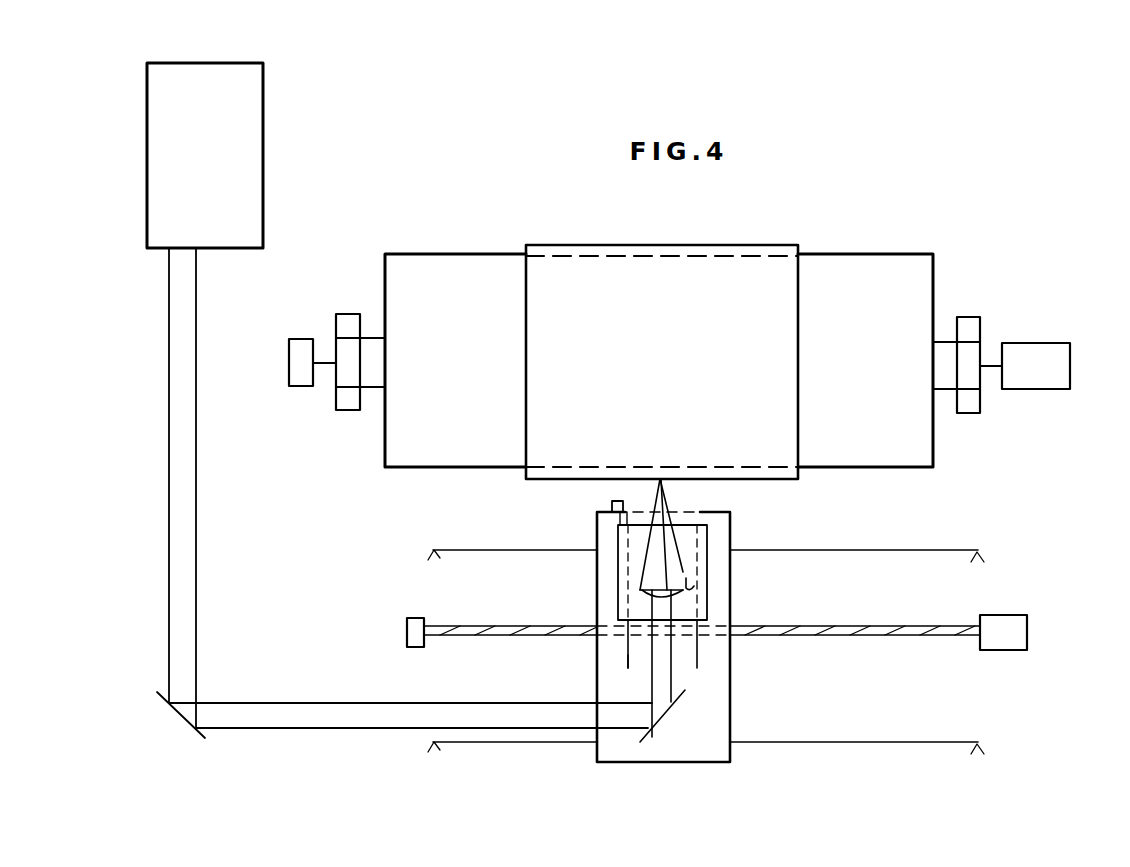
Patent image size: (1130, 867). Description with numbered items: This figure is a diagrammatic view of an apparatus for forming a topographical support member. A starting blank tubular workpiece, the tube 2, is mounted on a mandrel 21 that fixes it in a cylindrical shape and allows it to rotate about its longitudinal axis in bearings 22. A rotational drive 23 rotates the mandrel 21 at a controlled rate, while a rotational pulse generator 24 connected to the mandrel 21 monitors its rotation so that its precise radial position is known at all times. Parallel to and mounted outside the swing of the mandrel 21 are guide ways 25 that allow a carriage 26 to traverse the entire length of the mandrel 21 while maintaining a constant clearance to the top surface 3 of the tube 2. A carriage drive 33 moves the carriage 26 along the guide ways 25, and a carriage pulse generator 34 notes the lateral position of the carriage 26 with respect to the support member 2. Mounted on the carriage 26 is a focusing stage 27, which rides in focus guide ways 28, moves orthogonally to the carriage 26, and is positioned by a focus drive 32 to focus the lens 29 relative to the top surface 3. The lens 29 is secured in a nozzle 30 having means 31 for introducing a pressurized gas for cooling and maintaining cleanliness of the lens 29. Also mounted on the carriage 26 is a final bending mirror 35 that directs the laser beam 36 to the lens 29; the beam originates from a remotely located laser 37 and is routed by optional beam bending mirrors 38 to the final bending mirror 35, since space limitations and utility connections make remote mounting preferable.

The tube 2 is at (684, 230).
The top surface 3 is at (530, 480).
The mandrel 21 is at (877, 255).
The bearings 22 is at (343, 313).
The rotational drive 23 is at (1062, 343).
The rotational pulse generator 24 is at (296, 338).
The guide ways 25 is at (968, 550).
The carriage 26 is at (690, 763).
The focusing stage 27 is at (731, 541).
The focus guide ways 28 is at (697, 658).
The lens 29 is at (642, 586).
The nozzle 30 is at (683, 545).
The means for introducing a pressurized gas 31 is at (691, 588).
The focus drive 32 is at (612, 504).
The carriage drive 33 is at (1019, 646).
The carriage pulse generator 34 is at (407, 631).
The final bending mirror 35 is at (685, 691).
The laser beam 36 is at (194, 404).
The laser 37 is at (221, 166).
The beam bending mirrors 38 is at (189, 729).